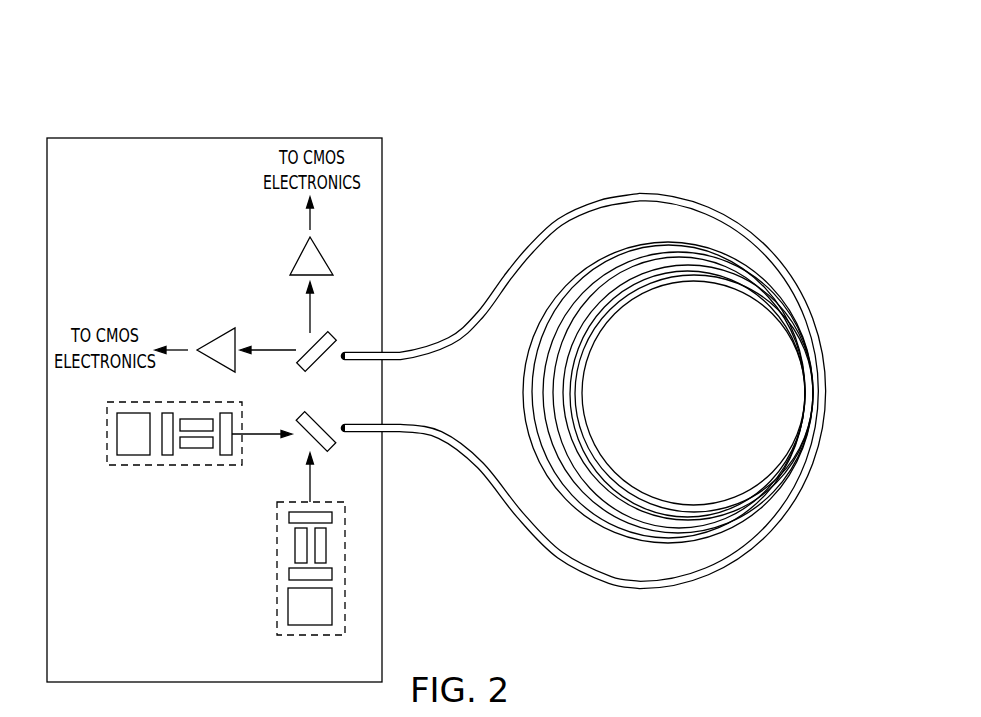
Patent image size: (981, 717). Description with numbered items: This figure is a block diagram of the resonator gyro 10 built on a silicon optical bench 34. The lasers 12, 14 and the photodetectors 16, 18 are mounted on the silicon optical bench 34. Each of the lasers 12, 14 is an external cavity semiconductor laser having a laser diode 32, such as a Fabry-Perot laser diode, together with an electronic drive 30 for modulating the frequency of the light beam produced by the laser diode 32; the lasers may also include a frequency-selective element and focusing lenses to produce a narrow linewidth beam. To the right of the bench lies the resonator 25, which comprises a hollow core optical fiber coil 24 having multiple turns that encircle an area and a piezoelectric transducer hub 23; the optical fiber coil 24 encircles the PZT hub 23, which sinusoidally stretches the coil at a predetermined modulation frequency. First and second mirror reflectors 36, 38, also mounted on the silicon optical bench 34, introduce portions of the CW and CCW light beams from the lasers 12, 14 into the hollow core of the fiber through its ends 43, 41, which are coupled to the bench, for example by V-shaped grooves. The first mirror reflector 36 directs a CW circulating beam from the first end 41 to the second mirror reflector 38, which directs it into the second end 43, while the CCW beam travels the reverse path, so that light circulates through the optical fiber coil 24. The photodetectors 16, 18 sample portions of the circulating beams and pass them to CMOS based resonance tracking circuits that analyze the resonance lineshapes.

The resonator gyro 10 is at (135, 118).
The laser 12 is at (276, 568).
The laser 14 is at (172, 466).
The photodetector 16 is at (222, 333).
The photodetector 18 is at (290, 258).
The piezoelectric transducer hub 23 is at (665, 276).
The hollow core optical fiber coil 24 is at (706, 201).
The resonator 25 is at (415, 250).
The electronic drive 30 is at (137, 448).
The laser diode 32 is at (198, 448).
The silicon optical bench 34 is at (110, 190).
The first mirror reflector 36 is at (330, 450).
The second mirror reflector 38 is at (326, 332).
The first end 41 is at (362, 417).
The second end 43 is at (365, 345).